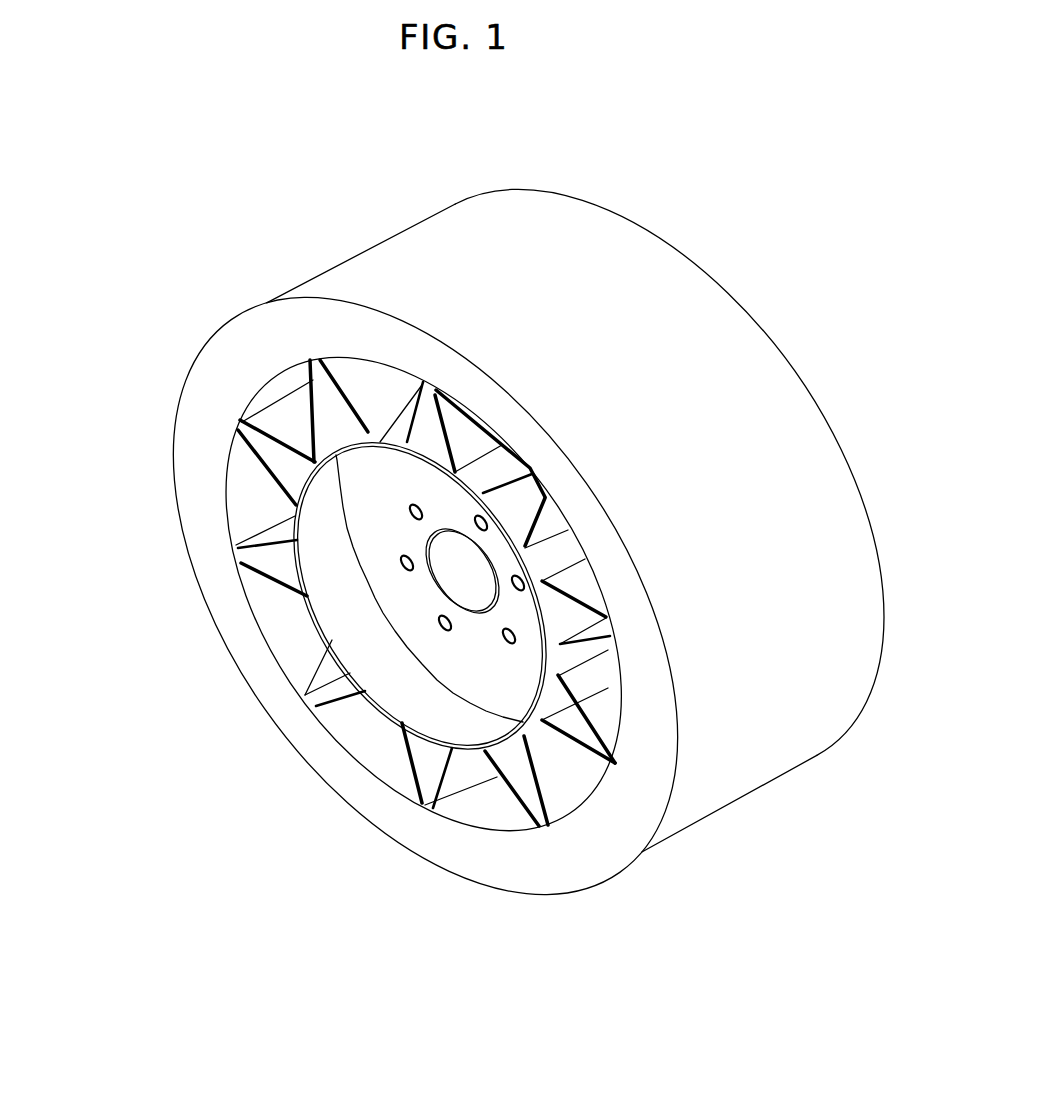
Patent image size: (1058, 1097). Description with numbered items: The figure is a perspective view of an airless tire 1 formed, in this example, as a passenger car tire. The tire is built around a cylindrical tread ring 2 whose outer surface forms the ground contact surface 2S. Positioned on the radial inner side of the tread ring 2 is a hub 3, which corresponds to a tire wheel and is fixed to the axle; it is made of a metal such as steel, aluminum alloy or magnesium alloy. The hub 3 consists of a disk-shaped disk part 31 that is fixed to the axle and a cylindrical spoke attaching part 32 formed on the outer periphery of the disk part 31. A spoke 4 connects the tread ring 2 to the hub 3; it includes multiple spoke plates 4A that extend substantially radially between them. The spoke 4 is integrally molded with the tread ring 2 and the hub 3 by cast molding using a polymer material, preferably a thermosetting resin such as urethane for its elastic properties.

The airless tire 1 is at (662, 203).
The tread ring 2 is at (818, 503).
The ground contact surface 2S is at (752, 732).
The hub 3 is at (92, 384).
The disk part 31 is at (367, 507).
The spoke attaching part 32 is at (340, 612).
The spoke 4 is at (367, 392).
The spoke plates 4A is at (425, 593).